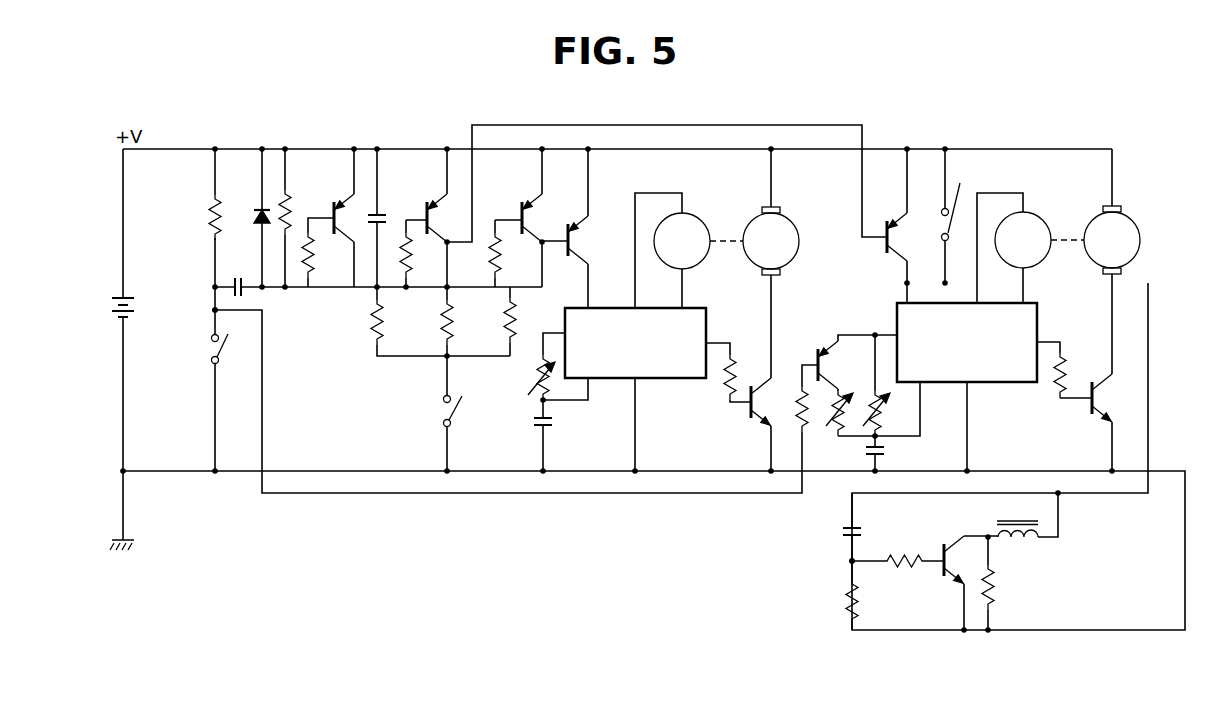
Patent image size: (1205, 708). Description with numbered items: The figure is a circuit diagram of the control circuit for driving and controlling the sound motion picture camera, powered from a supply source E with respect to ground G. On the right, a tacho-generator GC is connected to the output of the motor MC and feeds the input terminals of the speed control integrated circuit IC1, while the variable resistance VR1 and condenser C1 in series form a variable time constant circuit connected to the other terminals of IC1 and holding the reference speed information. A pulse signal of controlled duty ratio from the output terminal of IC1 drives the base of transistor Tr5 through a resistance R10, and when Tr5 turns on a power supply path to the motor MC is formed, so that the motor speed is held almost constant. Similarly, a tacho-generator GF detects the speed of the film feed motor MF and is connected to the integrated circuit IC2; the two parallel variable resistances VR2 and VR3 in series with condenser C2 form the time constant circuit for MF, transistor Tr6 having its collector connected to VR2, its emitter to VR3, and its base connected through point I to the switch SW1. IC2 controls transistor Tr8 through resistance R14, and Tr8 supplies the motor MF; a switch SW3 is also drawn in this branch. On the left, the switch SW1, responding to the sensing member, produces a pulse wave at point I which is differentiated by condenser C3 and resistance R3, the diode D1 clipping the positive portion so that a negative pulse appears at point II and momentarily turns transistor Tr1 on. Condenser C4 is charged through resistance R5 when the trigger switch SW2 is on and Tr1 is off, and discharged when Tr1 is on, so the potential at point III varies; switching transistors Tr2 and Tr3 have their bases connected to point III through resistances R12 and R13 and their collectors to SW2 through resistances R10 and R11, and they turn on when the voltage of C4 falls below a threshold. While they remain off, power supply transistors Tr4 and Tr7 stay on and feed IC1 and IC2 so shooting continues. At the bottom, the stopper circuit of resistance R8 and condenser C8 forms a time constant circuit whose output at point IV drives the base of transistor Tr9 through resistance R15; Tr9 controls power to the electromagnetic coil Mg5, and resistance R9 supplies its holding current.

The battery E is at (112, 302).
The ground G is at (126, 536).
The point I is at (212, 311).
The point II is at (285, 289).
The point III is at (406, 289).
The terminal IV is at (850, 561).
The switch SW1 is at (211, 359).
The trigger switch SW2 is at (443, 408).
The switch SW3 is at (953, 209).
The diode D1 is at (256, 207).
The condenser C1 is at (534, 425).
The condenser C2 is at (890, 452).
The condenser C3 is at (237, 279).
The condenser C4 is at (381, 212).
The condenser C8 is at (843, 531).
The resistance R3 is at (293, 200).
The resistance R5 is at (371, 322).
The resistance R8 is at (860, 598).
The resistance R9 is at (996, 590).
The resistance R10 is at (453, 322).
The resistance R11 is at (520, 312).
The resistance R12 is at (410, 230).
The resistance R13 is at (500, 228).
The resistance R14 is at (1067, 370).
The resistance R15 is at (890, 555).
The variable resistance VR1 is at (538, 372).
The variable resistance VR2 is at (831, 406).
The variable resistance VR3 is at (893, 412).
The transistor Tr1 is at (348, 241).
The switching transistor Tr2 is at (441, 245).
The switching transistor Tr3 is at (535, 245).
The transistor Tr4 is at (580, 238).
The transistor Tr5 is at (746, 410).
The transistor Tr6 is at (814, 356).
The transistor Tr7 is at (894, 256).
The transistor Tr8 is at (1089, 406).
The transistor Tr9 is at (950, 545).
The speed control integrated circuit IC1 is at (635, 344).
The integrated circuit IC2 is at (967, 342).
The tacho-generator GC is at (690, 228).
The motor MC is at (785, 228).
The tacho-generator GF is at (1033, 228).
The motor MF is at (1125, 228).
The electromagnetic coil Mg5 is at (1016, 518).